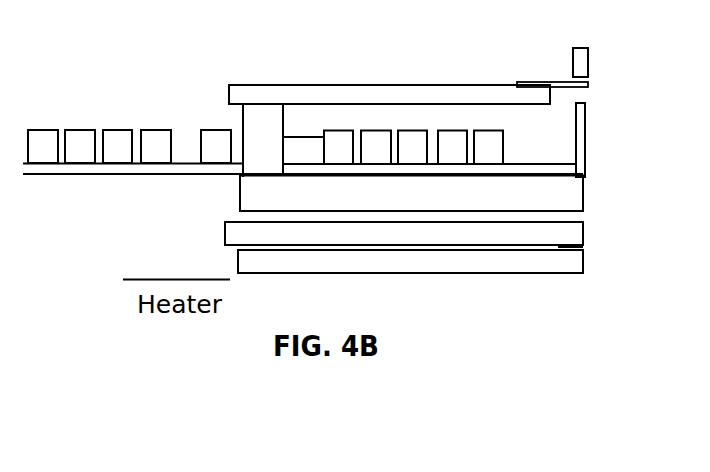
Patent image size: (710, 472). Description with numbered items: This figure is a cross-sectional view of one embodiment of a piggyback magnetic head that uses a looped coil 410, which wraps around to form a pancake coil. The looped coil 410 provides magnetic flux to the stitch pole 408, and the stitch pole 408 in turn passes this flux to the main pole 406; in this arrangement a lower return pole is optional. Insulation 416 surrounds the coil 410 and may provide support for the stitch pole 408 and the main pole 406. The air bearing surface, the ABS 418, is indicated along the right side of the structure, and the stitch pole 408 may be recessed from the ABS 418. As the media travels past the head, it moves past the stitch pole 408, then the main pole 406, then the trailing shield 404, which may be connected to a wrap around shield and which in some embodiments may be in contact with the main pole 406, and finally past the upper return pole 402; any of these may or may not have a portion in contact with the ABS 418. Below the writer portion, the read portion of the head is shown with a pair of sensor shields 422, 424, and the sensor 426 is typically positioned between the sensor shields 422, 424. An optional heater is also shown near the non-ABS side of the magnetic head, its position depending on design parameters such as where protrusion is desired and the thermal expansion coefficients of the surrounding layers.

The upper return pole 402 is at (588, 59).
The trailing shield 404 is at (586, 143).
The main pole 406 is at (553, 82).
The stitch pole 408 is at (416, 85).
The looped coil 410 is at (486, 130).
The insulation 416 is at (463, 204).
The ABS 418 is at (591, 190).
The sensor shield 422 is at (225, 235).
The sensor shield 424 is at (238, 258).
The sensor 426 is at (577, 244).